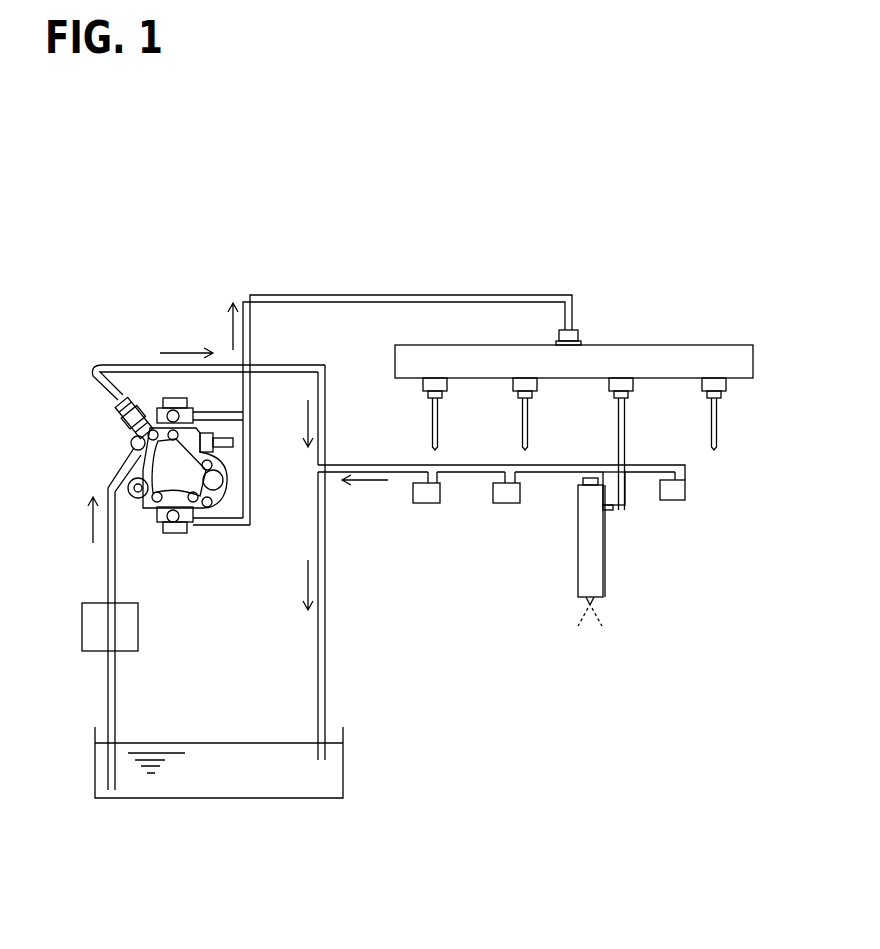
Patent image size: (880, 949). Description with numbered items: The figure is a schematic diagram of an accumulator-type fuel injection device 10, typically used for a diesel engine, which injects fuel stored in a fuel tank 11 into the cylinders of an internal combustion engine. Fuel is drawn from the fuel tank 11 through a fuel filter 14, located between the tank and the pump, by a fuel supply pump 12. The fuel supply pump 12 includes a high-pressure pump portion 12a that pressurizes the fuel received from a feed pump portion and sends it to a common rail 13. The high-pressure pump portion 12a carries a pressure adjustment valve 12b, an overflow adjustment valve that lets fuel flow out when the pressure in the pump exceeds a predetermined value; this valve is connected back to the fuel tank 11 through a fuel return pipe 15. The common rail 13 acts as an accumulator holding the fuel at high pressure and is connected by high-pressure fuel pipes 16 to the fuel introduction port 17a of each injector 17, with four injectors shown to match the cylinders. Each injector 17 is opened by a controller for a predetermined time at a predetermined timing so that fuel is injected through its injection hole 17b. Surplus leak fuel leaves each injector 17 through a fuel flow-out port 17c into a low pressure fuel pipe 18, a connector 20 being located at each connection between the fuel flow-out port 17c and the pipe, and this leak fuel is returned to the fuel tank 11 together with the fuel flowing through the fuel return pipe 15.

The fuel injection device 10 is at (163, 290).
The fuel tank 11 is at (345, 775).
The fuel supply pump 12 is at (146, 505).
The high-pressure pump portion 12a is at (186, 482).
The pressure adjustment valve 12b is at (120, 420).
The common rail 13 is at (665, 345).
The fuel filter 14 is at (138, 627).
The fuel return pipe 15 is at (278, 375).
The high-pressure fuel pipe 16 is at (432, 402).
The injector 17 is at (420, 503).
The fuel introduction port 17a is at (612, 508).
The injection hole 17b is at (598, 604).
The fuel flow-out port 17c is at (584, 480).
The low pressure fuel pipe 18 is at (395, 463).
The connector 20 is at (414, 483).